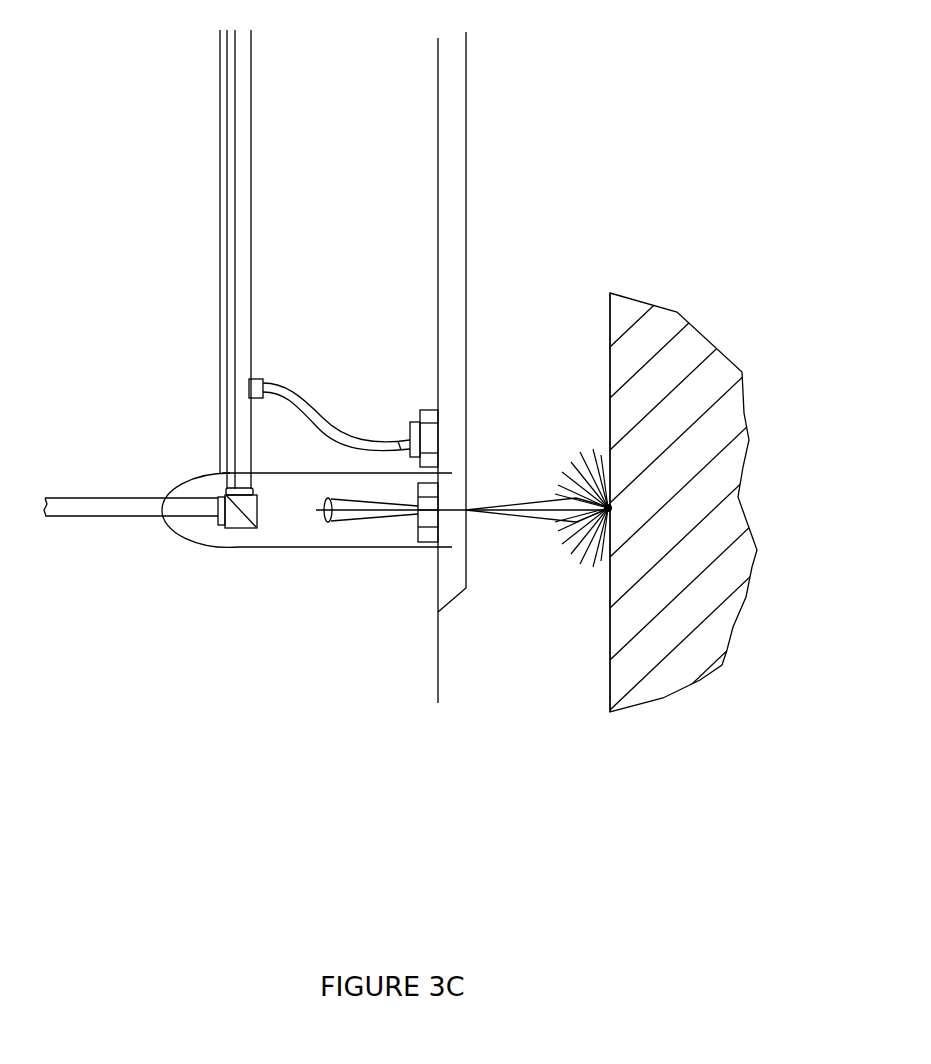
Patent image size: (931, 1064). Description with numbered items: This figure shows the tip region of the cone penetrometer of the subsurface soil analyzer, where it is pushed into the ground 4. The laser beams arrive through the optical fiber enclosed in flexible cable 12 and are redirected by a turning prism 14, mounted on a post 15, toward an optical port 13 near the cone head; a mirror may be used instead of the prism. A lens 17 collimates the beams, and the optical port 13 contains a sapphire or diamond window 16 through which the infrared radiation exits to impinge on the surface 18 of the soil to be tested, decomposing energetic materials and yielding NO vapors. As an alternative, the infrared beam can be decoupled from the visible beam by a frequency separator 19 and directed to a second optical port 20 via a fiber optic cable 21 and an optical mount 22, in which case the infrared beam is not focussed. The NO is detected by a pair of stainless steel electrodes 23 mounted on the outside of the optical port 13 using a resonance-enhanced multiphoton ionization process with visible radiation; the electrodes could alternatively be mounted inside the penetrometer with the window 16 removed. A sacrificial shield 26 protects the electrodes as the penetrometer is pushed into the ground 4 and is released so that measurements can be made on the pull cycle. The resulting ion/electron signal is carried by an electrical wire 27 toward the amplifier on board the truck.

The ground 4 is at (770, 381).
The flexible cable 12 is at (312, 262).
The optical port 13 is at (439, 623).
The turning prism 14 is at (180, 558).
The post 15 is at (115, 467).
The sapphire or diamond window 16 is at (350, 487).
The lens 17 is at (328, 593).
The surface 18 is at (526, 538).
The frequency separator 19 is at (189, 348).
The optical port 20 is at (496, 392).
The fiber optic cable 21 is at (344, 375).
The optical mount 22 is at (384, 402).
The stainless steel electrodes 23 is at (443, 629).
The sacrificial shield 26 is at (551, 367).
The electrical wire 27 is at (261, 347).